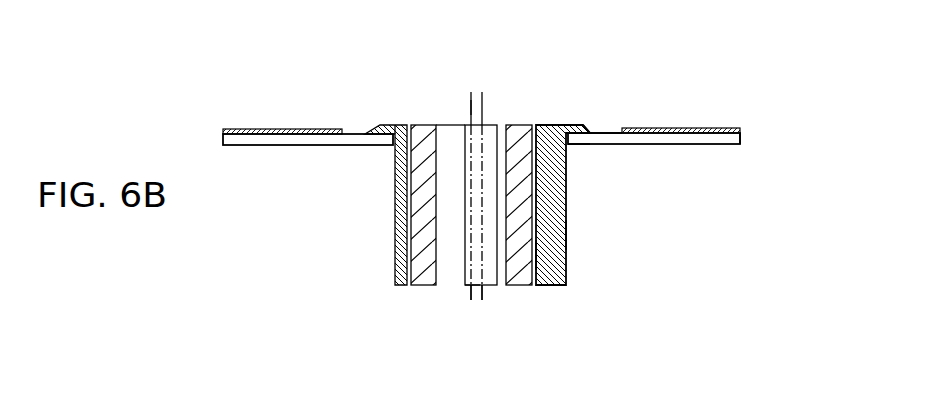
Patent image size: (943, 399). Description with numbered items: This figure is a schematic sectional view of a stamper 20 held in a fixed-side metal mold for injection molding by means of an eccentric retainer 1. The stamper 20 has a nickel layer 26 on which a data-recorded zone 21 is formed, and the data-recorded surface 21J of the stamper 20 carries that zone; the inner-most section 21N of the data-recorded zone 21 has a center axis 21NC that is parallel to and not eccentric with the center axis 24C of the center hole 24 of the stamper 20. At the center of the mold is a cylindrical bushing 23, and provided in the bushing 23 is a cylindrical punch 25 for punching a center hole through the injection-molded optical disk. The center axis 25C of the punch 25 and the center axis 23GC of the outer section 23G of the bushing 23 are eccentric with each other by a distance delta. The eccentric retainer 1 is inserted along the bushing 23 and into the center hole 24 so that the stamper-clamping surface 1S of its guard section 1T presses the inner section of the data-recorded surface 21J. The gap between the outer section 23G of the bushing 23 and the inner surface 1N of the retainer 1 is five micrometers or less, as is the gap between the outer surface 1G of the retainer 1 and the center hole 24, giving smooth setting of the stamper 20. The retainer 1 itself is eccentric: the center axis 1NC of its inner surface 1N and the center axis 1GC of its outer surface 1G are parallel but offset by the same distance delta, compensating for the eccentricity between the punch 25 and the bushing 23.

The eccentric retainer 1 is at (562, 203).
The outer surface 1G is at (567, 233).
The guard section 1T is at (588, 125).
The stamper-clamping surface 1S is at (577, 144).
The inner surface 1N is at (533, 257).
The center axis of the inner surface 1NC is at (472, 295).
The center axis of the outer surface 1GC is at (482, 293).
The stamper 20 is at (720, 144).
The data-recorded zone 21 is at (727, 128).
The data-recorded surface 21J is at (353, 135).
The inner-most section of the data-recorded zone 21N is at (610, 128).
The center axis of the inner-most section 21NC is at (470, 108).
The bushing 23 is at (515, 125).
The outer section of the bushing 23G is at (547, 124).
The center axis of the outer section of the bushing 23GC is at (467, 121).
The center hole 24 is at (395, 145).
The center axis of the center hole 24C is at (471, 287).
The punch 25 is at (493, 125).
The center axis of the punch 25C is at (485, 108).
The nickel layer 26 is at (742, 140).